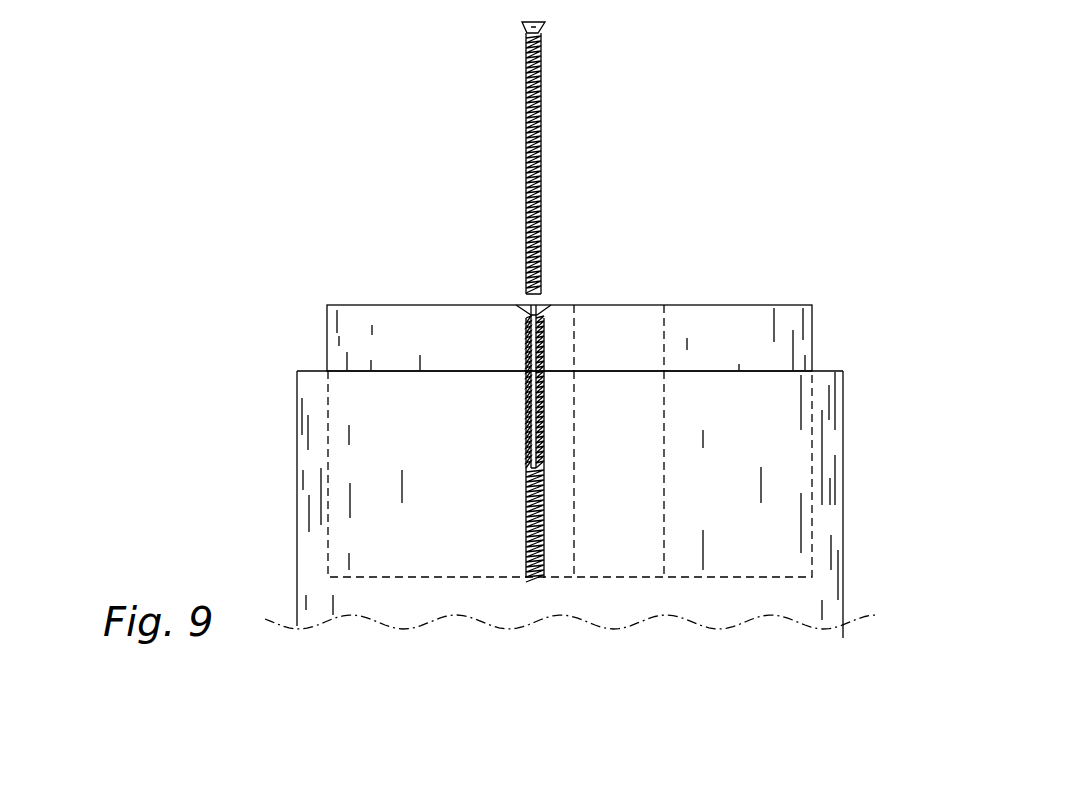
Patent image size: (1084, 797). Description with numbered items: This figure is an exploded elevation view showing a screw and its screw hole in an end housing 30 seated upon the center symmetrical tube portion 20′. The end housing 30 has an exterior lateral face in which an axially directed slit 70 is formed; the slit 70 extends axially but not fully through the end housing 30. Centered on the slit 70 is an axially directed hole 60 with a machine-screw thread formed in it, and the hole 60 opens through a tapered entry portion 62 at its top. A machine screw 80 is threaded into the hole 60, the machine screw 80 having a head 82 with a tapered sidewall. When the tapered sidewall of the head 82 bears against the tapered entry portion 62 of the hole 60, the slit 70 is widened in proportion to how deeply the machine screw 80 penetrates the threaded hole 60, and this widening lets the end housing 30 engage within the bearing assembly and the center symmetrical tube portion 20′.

The center symmetrical tube portion 20′ is at (843, 462).
The end housing 30 is at (812, 338).
The hole 60 is at (525, 340).
The tapered entry portion 62 is at (522, 312).
The slit 70 is at (547, 315).
The machine screw 80 is at (527, 50).
The head 82 is at (536, 22).